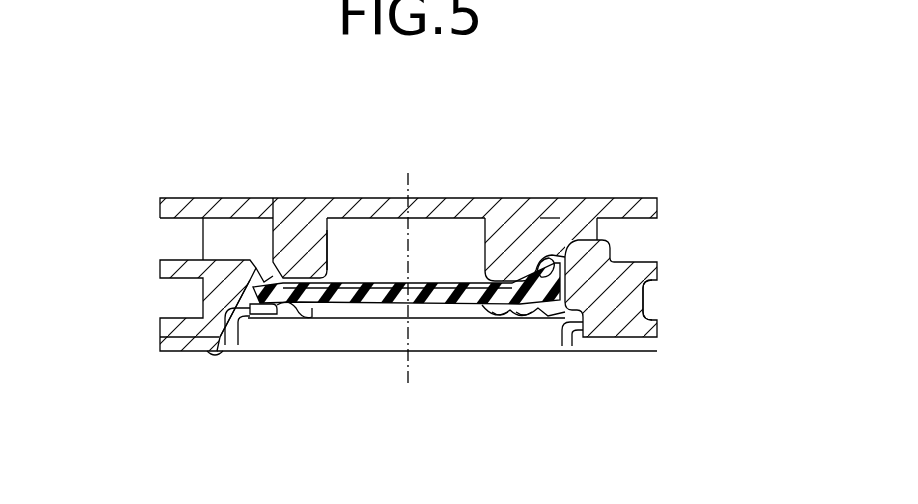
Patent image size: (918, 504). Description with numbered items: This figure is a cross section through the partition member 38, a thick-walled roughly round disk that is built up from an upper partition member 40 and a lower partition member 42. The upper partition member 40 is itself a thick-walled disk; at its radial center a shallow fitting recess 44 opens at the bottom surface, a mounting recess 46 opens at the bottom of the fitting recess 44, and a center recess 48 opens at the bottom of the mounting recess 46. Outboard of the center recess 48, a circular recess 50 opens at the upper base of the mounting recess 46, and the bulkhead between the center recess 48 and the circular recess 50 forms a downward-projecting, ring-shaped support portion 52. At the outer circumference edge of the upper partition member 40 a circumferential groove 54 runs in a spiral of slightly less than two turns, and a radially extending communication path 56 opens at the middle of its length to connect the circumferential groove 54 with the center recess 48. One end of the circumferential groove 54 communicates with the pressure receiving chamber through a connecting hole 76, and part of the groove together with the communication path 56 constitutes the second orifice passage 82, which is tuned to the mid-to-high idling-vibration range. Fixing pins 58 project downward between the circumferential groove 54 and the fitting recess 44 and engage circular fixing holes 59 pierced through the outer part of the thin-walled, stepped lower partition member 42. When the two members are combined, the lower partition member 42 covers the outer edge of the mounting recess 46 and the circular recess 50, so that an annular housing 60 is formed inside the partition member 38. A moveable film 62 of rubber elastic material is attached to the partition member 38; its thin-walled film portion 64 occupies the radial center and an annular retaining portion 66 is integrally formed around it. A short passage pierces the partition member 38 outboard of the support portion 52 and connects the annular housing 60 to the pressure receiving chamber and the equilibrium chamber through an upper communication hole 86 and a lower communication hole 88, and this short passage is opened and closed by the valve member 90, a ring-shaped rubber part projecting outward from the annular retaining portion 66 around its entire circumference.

The partition member 38 is at (156, 174).
The upper partition member 40 is at (630, 207).
The lower partition member 42 is at (630, 346).
The fitting recess 44 is at (572, 336).
The mounting recess 46 is at (553, 308).
The center recess 48 is at (462, 224).
The circular recess 50 is at (542, 263).
The support portion 52 is at (318, 253).
The circumferential groove 54 is at (645, 292).
The communication path 56 is at (582, 222).
The fixing pins 58 is at (220, 353).
The fixing holes 59 is at (221, 332).
The annular housing 60 is at (568, 252).
The moveable film 62 is at (448, 316).
The film portion 64 is at (358, 302).
The annular retaining portion 66 is at (291, 304).
The connecting hole 76 is at (204, 209).
The second orifice passage 82 is at (550, 214).
The upper communication hole 86 is at (258, 208).
The lower communication hole 88 is at (258, 315).
The valve member 90 is at (260, 281).